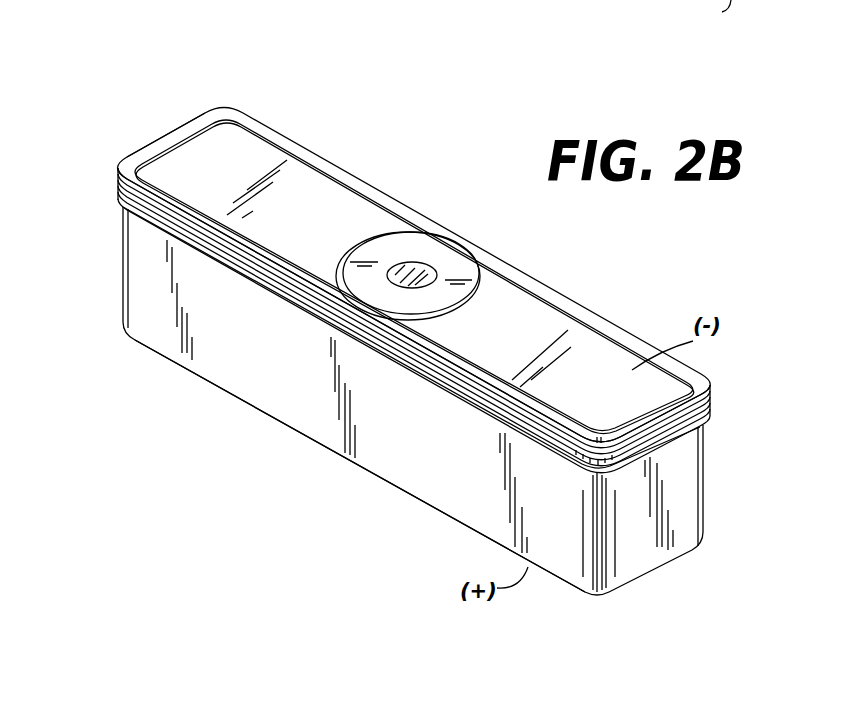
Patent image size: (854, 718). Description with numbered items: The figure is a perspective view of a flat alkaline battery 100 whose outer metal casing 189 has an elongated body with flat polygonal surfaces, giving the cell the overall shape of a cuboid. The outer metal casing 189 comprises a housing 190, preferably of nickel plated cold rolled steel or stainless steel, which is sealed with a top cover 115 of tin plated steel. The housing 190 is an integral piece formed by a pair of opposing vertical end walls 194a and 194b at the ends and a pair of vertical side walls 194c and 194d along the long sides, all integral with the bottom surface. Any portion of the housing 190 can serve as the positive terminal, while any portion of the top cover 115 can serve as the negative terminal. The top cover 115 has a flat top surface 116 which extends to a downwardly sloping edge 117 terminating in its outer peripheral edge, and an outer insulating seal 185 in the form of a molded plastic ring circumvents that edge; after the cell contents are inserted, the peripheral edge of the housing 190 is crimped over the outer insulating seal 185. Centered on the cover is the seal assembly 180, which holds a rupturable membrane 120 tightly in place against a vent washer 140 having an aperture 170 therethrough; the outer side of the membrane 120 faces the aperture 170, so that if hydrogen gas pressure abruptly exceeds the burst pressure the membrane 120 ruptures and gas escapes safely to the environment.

The flat battery 100 is at (149, 66).
The top cover 115 is at (533, 326).
The flat top surface 116 is at (590, 353).
The downwardly sloping edge 117 is at (690, 394).
The rupturable membrane 120 is at (430, 283).
The vent washer 140 is at (399, 250).
The aperture 170 is at (407, 272).
The seal assembly 180 is at (478, 282).
The outer insulating seal 185 is at (707, 405).
The outer metal casing 189 is at (260, 390).
The housing 190 is at (430, 480).
The vertical end wall 194a is at (683, 504).
The vertical end wall 194b is at (160, 136).
The vertical side wall 194c is at (168, 345).
The vertical side wall 194d is at (322, 156).